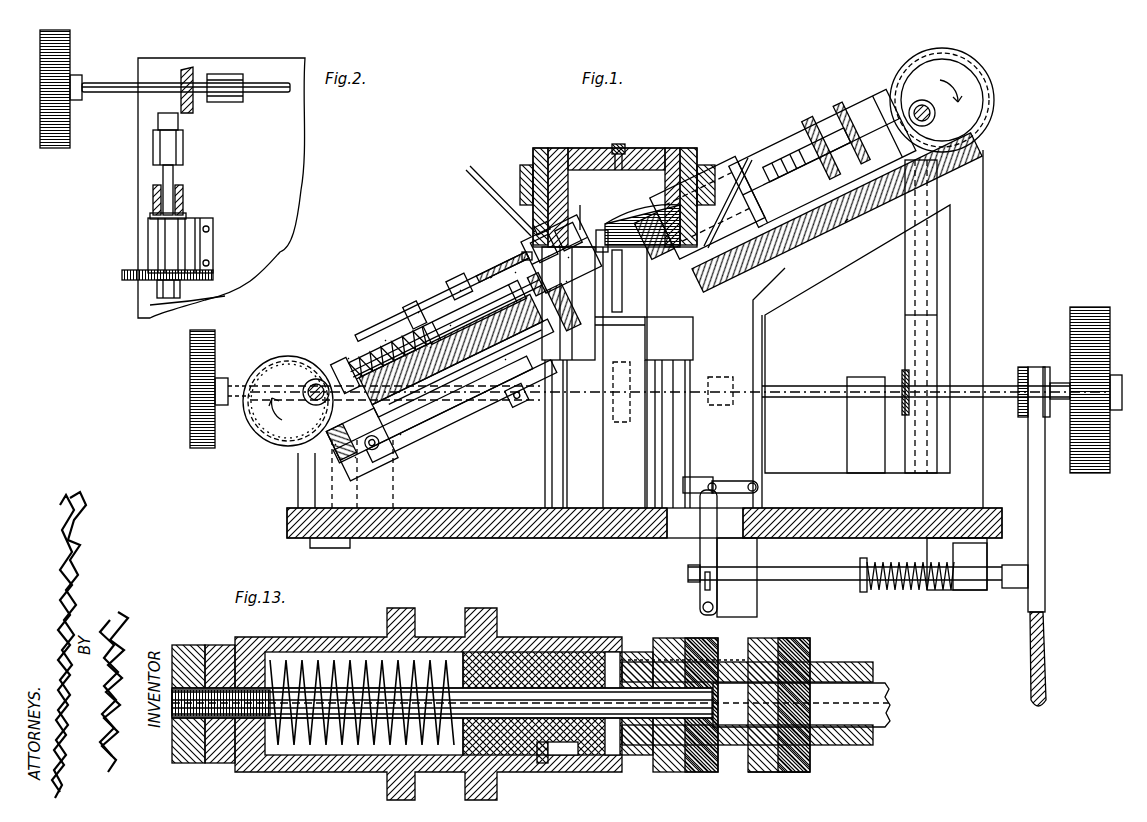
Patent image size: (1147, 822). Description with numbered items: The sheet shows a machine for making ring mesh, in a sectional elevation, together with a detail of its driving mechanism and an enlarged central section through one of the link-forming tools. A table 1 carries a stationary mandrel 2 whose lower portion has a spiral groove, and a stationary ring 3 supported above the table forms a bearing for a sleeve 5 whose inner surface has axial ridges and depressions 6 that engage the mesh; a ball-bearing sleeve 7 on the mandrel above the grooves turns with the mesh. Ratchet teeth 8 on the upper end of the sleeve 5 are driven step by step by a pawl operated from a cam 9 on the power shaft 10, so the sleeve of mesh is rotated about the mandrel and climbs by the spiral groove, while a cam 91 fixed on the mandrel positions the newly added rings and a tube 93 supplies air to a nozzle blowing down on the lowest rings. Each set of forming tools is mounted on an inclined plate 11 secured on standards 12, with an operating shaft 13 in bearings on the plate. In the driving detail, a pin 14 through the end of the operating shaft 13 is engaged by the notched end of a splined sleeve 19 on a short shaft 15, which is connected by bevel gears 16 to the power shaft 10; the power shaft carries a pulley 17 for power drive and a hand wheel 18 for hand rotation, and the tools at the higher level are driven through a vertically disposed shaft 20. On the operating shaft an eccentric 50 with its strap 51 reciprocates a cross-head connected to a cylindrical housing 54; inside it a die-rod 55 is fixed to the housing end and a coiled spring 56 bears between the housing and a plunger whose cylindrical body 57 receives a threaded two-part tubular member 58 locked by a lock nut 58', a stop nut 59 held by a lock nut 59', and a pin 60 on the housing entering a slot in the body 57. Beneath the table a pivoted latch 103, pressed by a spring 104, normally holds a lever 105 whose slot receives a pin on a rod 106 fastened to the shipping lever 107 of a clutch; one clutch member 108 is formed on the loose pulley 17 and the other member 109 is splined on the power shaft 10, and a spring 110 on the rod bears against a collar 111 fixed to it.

In FIG. 2, the table 1 is at (296, 165).
In FIG. 1, the table 1 is at (530, 538).
In FIG. 1, the stationary mandrel 2 is at (635, 240).
In FIG. 1, the stationary ring 3 is at (520, 182).
In FIG. 1, the sleeve 5 is at (533, 165).
In FIG. 1, the ridges and depressions 6 is at (557, 150).
In FIG. 1, the sleeve 7 is at (665, 190).
In FIG. 1, the ratchet teeth 8 is at (533, 150).
In FIG. 1, the cam 9 is at (612, 412).
In FIG. 2, the power shaft 10 is at (110, 84).
In FIG. 1, the power shaft 10 is at (806, 398).
In FIG. 2, the plate 11 is at (194, 245).
In FIG. 1, the standards 12 is at (752, 340).
In FIG. 2, the operating shaft 13 is at (160, 294).
In FIG. 2, the pin 14 is at (150, 215).
In FIG. 2, the short shaft 15 is at (163, 174).
In FIG. 1, the short shaft 15 is at (600, 242).
In FIG. 2, the bevel gears 16 is at (181, 100).
In FIG. 1, the pulley 17 is at (1090, 472).
In FIG. 2, the hand wheel 18 is at (58, 140).
In FIG. 1, the hand wheel 18 is at (190, 412).
In FIG. 2, the sleeve 19 is at (153, 195).
In FIG. 1, the vertically disposed shaft 20 is at (905, 292).
In FIG. 1, the eccentric 50 is at (272, 428).
In FIG. 1, the strap 51 is at (305, 350).
In FIG. 13, the cylindrical housing 54 is at (340, 637).
In FIG. 13, the die-rod 55 is at (442, 703).
In FIG. 13, the coiled spring 56 is at (420, 655).
In FIG. 13, the cylindrical body 57 is at (560, 652).
In FIG. 13, the tubular member 58 is at (757, 689).
In FIG. 13, the lock nut 58' is at (690, 716).
In FIG. 13, the nut 59 is at (794, 716).
In FIG. 13, the lock nut 59' is at (779, 783).
In FIG. 1, the pin 60 is at (561, 254).
In FIG. 13, the pin 60 is at (545, 764).
In FIG. 1, the cam 91 is at (620, 300).
In FIG. 1, the tube 93 is at (478, 186).
In FIG. 1, the pivoted latch 103 is at (683, 474).
In FIG. 1, the spring 104 is at (732, 480).
In FIG. 1, the lever 105 is at (700, 548).
In FIG. 1, the rod 106 is at (688, 576).
In FIG. 1, the shipping lever 107 is at (1045, 522).
In FIG. 1, the clutch member 108 is at (1060, 382).
In FIG. 1, the clutch member 109 is at (1020, 366).
In FIG. 1, the spring 110 is at (898, 590).
In FIG. 1, the collar 111 is at (860, 588).